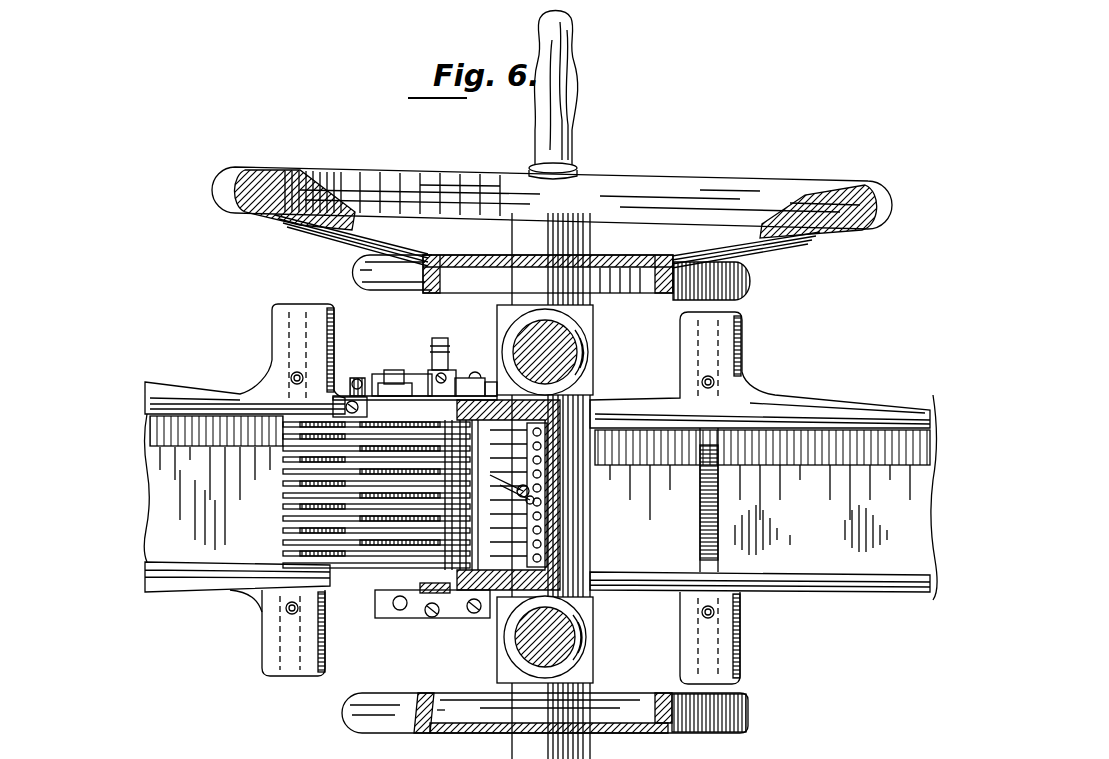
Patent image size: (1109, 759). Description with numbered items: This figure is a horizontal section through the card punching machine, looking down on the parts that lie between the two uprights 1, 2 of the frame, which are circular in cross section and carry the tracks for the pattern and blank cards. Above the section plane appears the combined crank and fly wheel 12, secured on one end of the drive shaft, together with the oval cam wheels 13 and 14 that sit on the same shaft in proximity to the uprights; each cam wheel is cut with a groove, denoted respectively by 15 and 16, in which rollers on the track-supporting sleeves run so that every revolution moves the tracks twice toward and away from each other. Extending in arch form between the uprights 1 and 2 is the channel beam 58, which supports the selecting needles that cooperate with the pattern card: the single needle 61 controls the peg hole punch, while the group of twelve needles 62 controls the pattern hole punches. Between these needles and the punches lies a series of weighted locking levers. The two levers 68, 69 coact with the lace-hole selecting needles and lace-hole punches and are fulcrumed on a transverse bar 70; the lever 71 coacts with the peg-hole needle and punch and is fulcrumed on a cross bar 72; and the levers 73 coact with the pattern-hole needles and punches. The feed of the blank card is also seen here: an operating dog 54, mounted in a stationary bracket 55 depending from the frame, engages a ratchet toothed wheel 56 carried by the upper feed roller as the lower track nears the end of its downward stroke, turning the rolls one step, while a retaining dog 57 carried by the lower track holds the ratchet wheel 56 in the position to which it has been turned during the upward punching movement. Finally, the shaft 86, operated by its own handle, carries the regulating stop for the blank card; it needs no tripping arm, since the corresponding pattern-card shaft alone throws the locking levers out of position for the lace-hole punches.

The upright 1 is at (583, 648).
The upright 2 is at (593, 363).
The combined crank and fly wheel 12 is at (699, 198).
The cam wheel 13 is at (545, 710).
The cam wheel 14 is at (396, 290).
The groove 15 is at (438, 710).
The groove 16 is at (453, 292).
The operating dog 54 is at (360, 394).
The stationary bracket 55 is at (390, 392).
The ratchet toothed wheel 56 is at (445, 388).
The retaining dog 57 is at (443, 393).
The channel beam 58 is at (545, 497).
The selecting needle 61 is at (548, 515).
The selecting needles 62 is at (538, 476).
The locking lever 68 is at (283, 431).
The locking lever 69 is at (283, 548).
The transverse bar 70 is at (440, 565).
The locking lever 71 is at (283, 495).
The cross bar 72 is at (465, 575).
The locking levers 73 is at (345, 495).
The shaft 86 is at (447, 355).